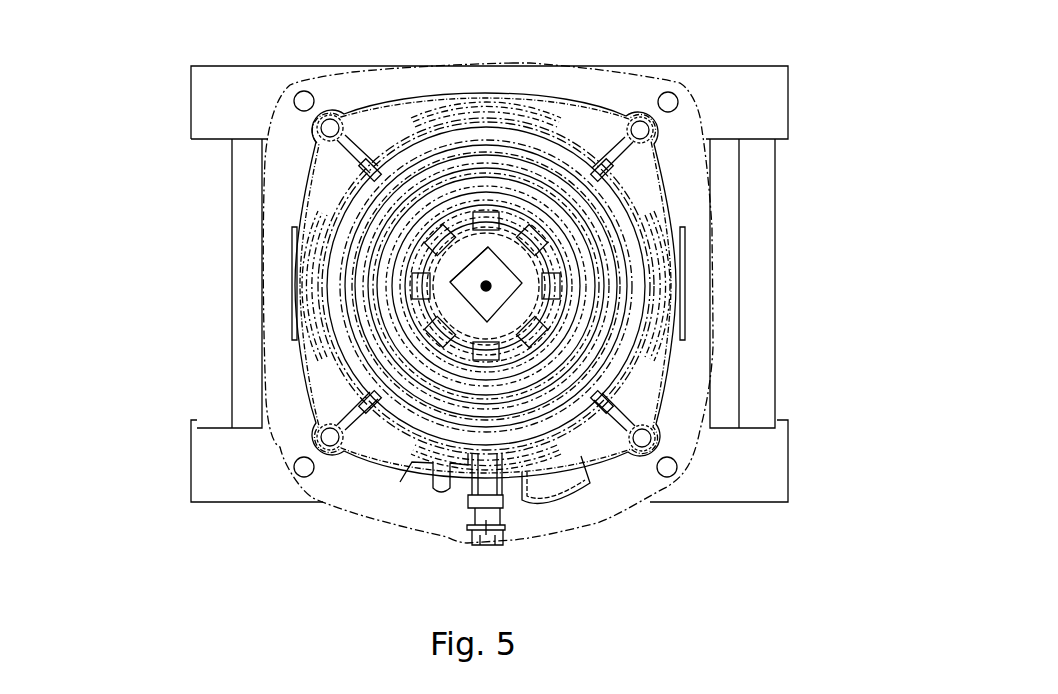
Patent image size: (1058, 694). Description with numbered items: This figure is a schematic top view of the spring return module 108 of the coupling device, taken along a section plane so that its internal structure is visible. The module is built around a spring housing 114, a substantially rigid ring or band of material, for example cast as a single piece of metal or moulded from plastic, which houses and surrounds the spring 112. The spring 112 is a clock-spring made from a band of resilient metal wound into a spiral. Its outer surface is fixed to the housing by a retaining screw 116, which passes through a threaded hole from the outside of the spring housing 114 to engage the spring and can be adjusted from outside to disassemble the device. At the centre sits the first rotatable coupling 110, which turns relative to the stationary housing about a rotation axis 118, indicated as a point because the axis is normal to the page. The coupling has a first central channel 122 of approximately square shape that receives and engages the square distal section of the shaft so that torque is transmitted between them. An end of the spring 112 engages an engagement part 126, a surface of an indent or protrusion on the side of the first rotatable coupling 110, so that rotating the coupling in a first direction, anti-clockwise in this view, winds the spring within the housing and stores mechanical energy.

The spring return module 108 is at (148, 68).
The first rotatable coupling 110 is at (527, 298).
The spring 112 is at (581, 142).
The spring housing 114 is at (608, 525).
The retaining screw 116 is at (500, 546).
The rotation axis 118 is at (486, 286).
The first central channel 122 is at (452, 283).
The engagement part 126 is at (465, 345).